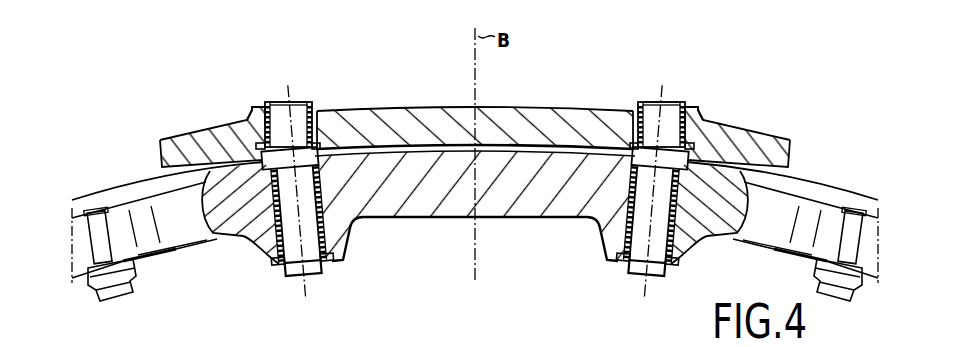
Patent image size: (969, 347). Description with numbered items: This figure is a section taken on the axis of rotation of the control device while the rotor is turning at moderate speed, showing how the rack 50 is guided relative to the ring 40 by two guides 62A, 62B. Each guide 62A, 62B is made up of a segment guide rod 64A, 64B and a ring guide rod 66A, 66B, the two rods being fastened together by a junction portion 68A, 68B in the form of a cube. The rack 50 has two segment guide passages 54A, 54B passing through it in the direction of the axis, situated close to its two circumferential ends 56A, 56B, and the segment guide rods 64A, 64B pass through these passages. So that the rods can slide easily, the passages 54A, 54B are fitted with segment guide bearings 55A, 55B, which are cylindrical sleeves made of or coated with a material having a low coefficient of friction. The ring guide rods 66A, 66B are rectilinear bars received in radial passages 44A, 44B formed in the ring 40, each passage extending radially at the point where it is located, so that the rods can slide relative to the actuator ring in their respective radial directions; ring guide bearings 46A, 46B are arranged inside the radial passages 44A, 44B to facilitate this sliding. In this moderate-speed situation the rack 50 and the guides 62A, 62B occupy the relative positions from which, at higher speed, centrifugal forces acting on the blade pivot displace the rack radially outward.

The ring 40 is at (510, 210).
The radial passage 44A is at (249, 243).
The radial passage 44B is at (697, 238).
The ring guide bearing 46A is at (326, 265).
The ring guide bearing 46B is at (623, 266).
The rack 50 is at (440, 106).
The segment guide passage 54A is at (276, 104).
The segment guide passage 54B is at (674, 102).
The segment guide bearing 55A is at (318, 108).
The segment guide bearing 55B is at (684, 112).
The end of the rack 56A is at (157, 160).
The end of the rack 56B is at (795, 153).
The guide 62A is at (306, 186).
The guide 62B is at (650, 187).
The segment guide rod 64A is at (292, 104).
The segment guide rod 64B is at (653, 106).
The ring guide rod 66A is at (298, 272).
The ring guide rod 66B is at (653, 268).
The junction portion 68A is at (250, 120).
The junction portion 68B is at (705, 122).